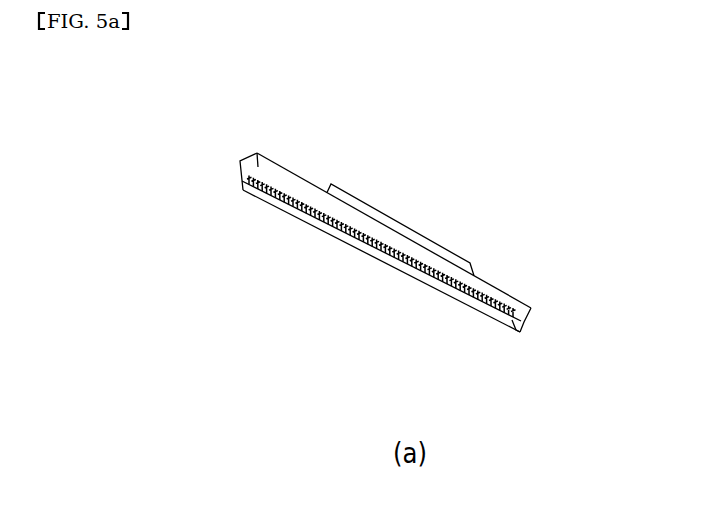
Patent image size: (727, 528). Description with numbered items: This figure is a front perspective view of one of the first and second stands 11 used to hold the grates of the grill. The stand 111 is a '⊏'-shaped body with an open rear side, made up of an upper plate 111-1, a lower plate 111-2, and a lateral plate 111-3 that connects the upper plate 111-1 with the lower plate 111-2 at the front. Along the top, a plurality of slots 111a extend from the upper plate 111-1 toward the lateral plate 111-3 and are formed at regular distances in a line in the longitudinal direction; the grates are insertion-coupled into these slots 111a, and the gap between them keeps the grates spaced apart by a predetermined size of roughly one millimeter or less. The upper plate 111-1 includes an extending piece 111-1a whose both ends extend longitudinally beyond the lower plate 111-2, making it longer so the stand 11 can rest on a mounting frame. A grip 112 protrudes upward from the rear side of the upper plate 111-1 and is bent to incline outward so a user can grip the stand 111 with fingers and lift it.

The first stand 11 is at (468, 140).
The stand 111 is at (134, 356).
The upper plate 111-1 is at (373, 218).
The lower plate 111-2 is at (511, 333).
The lateral plate 111-3 is at (470, 306).
The slots 111a is at (298, 192).
The extending piece 111-1a is at (240, 173).
The grip 112 is at (461, 256).